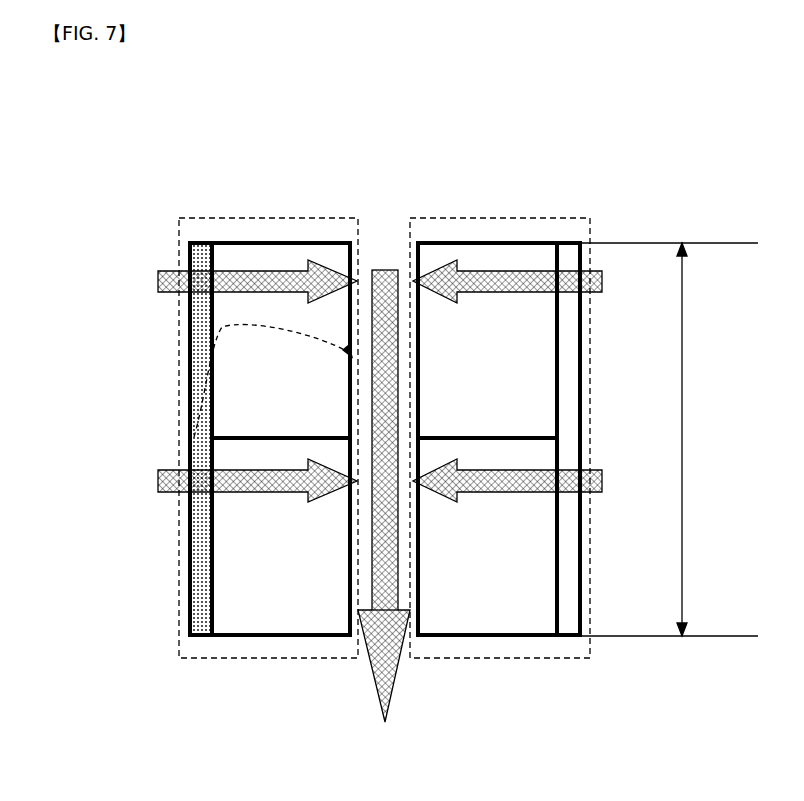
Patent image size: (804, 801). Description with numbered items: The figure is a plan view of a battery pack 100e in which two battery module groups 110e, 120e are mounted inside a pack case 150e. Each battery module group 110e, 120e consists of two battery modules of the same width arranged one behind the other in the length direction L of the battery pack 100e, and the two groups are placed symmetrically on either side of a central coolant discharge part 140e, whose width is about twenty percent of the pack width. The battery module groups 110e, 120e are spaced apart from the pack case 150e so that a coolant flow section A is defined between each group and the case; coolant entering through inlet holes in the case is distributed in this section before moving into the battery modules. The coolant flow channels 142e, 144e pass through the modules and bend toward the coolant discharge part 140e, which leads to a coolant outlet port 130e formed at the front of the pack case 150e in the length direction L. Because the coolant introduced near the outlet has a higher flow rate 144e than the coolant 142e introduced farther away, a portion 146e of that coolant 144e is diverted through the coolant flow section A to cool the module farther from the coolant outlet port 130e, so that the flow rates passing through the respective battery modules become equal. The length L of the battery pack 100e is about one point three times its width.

The battery pack 100e is at (148, 155).
The battery module group 110e is at (177, 343).
The battery module group 120e is at (590, 320).
The coolant outlet port 130e is at (368, 662).
The coolant discharge part 140e is at (370, 243).
The pack case 150e is at (462, 243).
The coolant flow channel 142e is at (158, 292).
The coolant flow channel 144e is at (158, 492).
The portion of coolant 146e is at (177, 437).
The coolant flow section A is at (200, 560).
The length direction L is at (669, 439).